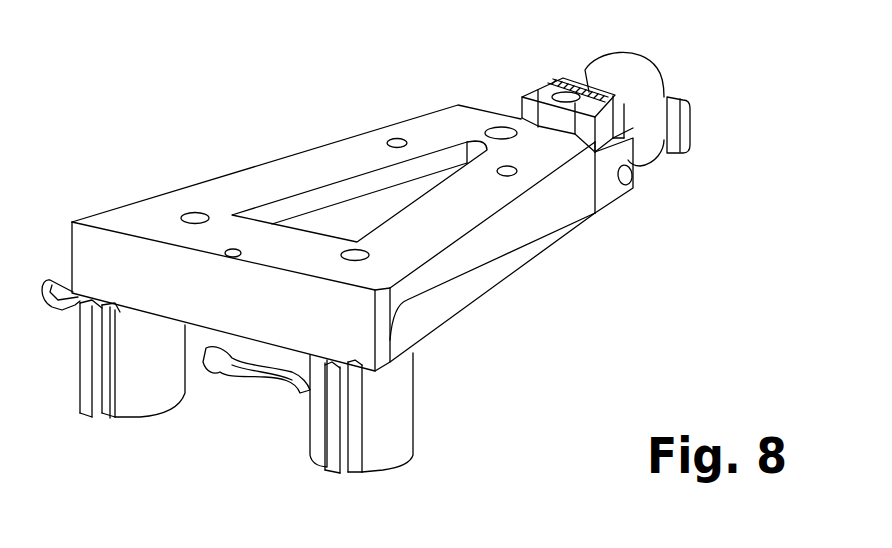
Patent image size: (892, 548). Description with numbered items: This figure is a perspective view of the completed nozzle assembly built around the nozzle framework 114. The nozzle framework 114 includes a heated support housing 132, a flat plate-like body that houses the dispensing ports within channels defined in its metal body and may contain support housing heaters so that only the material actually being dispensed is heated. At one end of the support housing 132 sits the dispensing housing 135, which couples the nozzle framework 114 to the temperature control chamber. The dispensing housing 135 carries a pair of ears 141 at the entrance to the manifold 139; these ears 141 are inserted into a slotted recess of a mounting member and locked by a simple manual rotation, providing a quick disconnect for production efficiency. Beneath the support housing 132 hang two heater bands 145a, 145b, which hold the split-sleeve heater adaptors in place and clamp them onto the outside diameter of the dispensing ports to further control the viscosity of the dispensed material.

The nozzle framework 114 is at (247, 120).
The heated support housing 132 is at (493, 290).
The manifold 139 is at (563, 80).
The dispensing housing 135 is at (660, 170).
The ears 141 is at (692, 124).
The heater band 145a is at (130, 408).
The heater band 145b is at (392, 468).